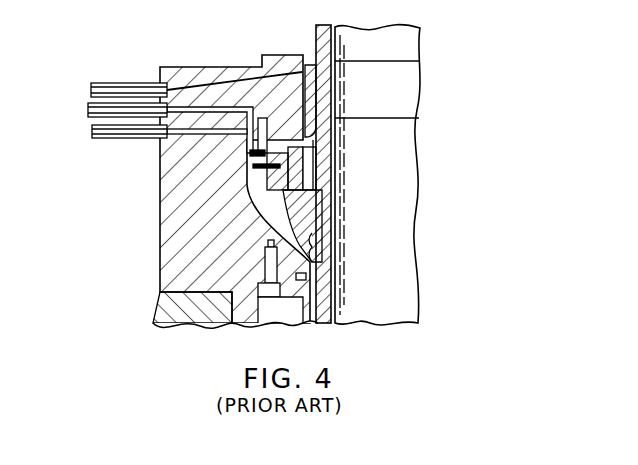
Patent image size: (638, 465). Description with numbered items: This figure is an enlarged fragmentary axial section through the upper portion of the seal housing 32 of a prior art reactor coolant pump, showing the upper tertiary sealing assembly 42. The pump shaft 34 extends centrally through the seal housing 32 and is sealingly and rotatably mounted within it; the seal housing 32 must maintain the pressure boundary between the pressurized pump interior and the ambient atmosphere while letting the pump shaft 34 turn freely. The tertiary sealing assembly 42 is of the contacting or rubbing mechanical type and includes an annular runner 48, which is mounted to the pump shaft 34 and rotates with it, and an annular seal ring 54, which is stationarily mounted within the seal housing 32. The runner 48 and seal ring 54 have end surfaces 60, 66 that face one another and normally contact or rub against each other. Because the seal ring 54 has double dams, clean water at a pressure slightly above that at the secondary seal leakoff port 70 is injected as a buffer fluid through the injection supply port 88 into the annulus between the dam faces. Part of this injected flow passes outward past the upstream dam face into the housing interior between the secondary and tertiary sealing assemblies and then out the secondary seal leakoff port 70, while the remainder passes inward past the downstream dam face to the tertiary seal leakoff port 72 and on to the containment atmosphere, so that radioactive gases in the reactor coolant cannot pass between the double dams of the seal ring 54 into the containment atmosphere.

The seal housing 32 is at (170, 313).
The pump shaft 34 is at (413, 45).
The upper tertiary sealing assembly 42 is at (352, 173).
The annular runner 48 is at (318, 235).
The annular seal ring 54 is at (318, 146).
The end surface of runner 60 is at (250, 167).
The end surface of seal ring 66 is at (320, 210).
The secondary seal leakoff port 70 is at (102, 125).
The tertiary seal leakoff port 72 is at (143, 83).
The injection supply port 88 is at (118, 103).